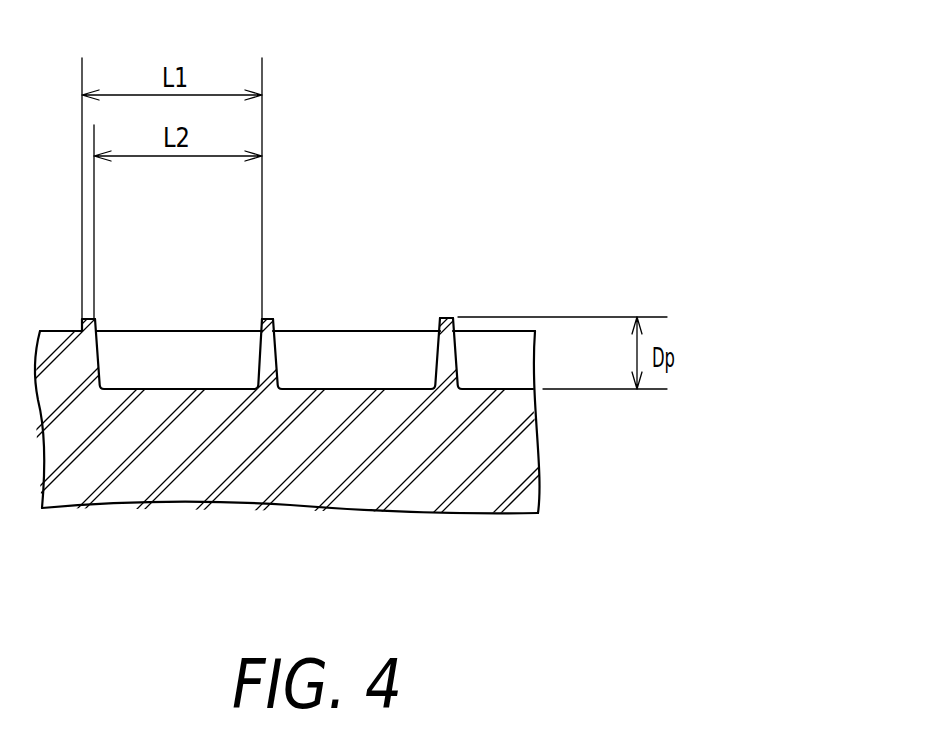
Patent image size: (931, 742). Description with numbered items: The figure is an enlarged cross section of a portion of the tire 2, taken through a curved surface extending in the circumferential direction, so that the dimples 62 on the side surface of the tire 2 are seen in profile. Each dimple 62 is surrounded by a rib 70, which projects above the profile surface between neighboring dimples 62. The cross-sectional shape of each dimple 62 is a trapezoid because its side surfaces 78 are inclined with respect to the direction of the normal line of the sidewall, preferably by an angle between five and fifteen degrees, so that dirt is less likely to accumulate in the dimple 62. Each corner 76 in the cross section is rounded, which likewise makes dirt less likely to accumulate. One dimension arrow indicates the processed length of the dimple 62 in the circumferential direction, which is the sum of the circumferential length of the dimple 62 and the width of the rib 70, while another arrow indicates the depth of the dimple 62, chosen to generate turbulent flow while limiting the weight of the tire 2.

The tire 2 is at (607, 53).
The dimple 62 is at (168, 389).
The rib 70 is at (445, 316).
The corner 76 is at (124, 372).
The side surface 78 is at (257, 362).